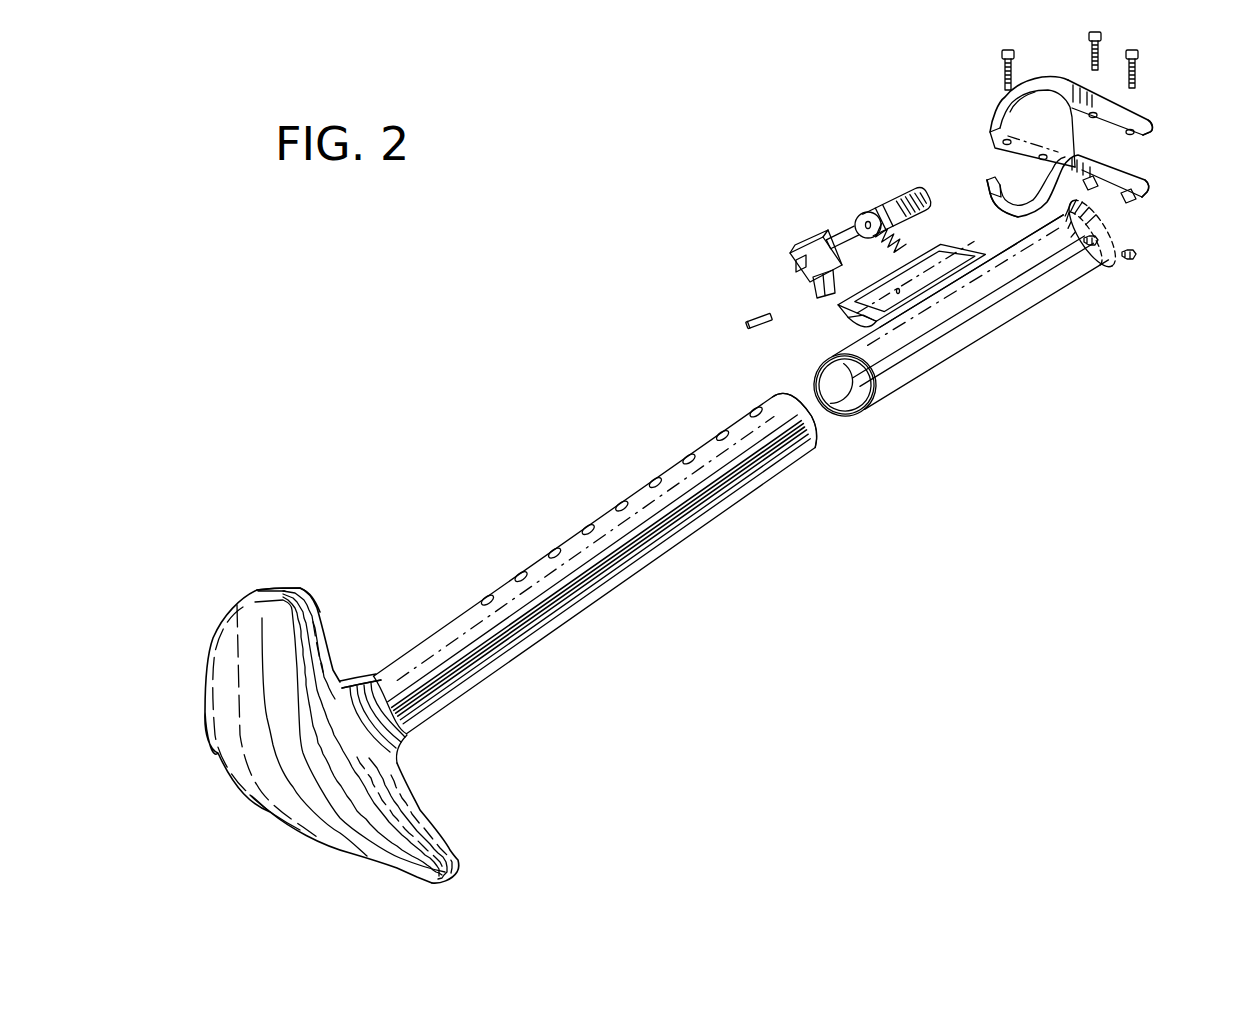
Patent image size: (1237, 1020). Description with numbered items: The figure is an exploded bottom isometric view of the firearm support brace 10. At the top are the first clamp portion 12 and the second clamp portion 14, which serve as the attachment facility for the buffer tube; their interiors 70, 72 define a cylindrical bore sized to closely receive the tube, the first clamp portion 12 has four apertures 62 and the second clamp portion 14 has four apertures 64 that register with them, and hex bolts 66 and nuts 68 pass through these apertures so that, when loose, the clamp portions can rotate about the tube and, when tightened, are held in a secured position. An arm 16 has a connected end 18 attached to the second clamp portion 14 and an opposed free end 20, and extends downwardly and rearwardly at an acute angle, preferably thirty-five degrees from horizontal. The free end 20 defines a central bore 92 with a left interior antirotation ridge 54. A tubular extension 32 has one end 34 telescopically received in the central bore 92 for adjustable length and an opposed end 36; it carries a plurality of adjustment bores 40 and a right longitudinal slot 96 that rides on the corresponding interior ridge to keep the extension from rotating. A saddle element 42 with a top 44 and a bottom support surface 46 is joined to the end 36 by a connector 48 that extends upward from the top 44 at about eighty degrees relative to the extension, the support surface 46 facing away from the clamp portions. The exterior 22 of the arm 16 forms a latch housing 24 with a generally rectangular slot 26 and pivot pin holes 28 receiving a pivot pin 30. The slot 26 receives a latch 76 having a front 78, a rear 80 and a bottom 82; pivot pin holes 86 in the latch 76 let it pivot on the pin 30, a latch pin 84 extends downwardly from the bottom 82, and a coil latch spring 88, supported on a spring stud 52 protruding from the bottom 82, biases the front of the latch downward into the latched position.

The firearm support brace 10 is at (530, 355).
The first clamp portion 12 is at (1048, 74).
The second clamp portion 14 is at (1140, 177).
The arm 16 is at (967, 348).
The connected end 18 is at (1072, 217).
The free end 20 is at (855, 415).
The exterior 22 is at (1032, 278).
The latch housing 24 is at (835, 313).
The slot 26 is at (910, 262).
The pivot pin holes 28 is at (900, 292).
The pivot pin 30 is at (760, 315).
The tubular extension 32 is at (676, 551).
The end 34 is at (813, 436).
The opposed end 36 is at (403, 747).
The adjustment bores 40 is at (705, 447).
The saddle element 42 is at (458, 845).
The top 44 is at (313, 597).
The bottom support surface 46 is at (328, 832).
The connector 48 is at (362, 690).
The spring stud 52 is at (887, 215).
The left interior antirotation ridge 54 is at (849, 374).
The apertures 62 is at (1137, 147).
The apertures 64 is at (1140, 213).
The hex bolts 66 is at (1140, 67).
The nuts 68 is at (1138, 257).
The interior 70 is at (1032, 103).
The interior 72 is at (1013, 183).
The latch 76 is at (866, 205).
The front 78 is at (790, 256).
The rear 80 is at (922, 185).
The bottom 82 is at (836, 268).
The latch pin 84 is at (815, 291).
The pivot pin holes 86 is at (848, 218).
The latch spring 88 is at (887, 237).
The central bore 92 is at (852, 400).
The right longitudinal slot 96 is at (567, 590).